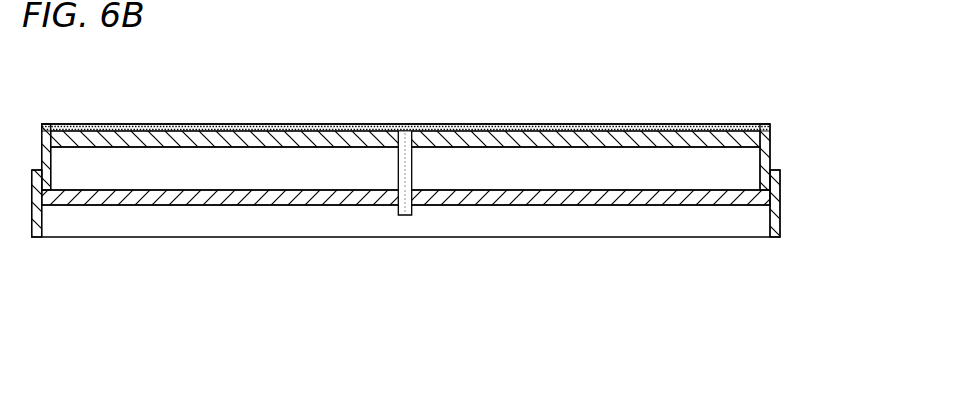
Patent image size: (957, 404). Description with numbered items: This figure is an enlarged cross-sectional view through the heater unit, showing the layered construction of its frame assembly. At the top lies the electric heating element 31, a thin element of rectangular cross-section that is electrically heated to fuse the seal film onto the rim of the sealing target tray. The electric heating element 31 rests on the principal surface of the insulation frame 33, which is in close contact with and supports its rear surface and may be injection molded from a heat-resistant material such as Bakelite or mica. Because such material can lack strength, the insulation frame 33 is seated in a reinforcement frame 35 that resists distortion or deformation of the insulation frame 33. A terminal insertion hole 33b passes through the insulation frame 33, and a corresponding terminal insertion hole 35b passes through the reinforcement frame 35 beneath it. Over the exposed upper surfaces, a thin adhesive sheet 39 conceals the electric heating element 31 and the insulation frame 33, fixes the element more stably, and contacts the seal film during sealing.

The electric heating element 31 is at (283, 120).
The insulation frame 33 is at (123, 121).
The reinforcement frame 35 is at (213, 198).
The adhesive sheet 39 is at (545, 121).
The terminal insertion hole 33b is at (393, 141).
The terminal insertion hole 35b is at (387, 194).